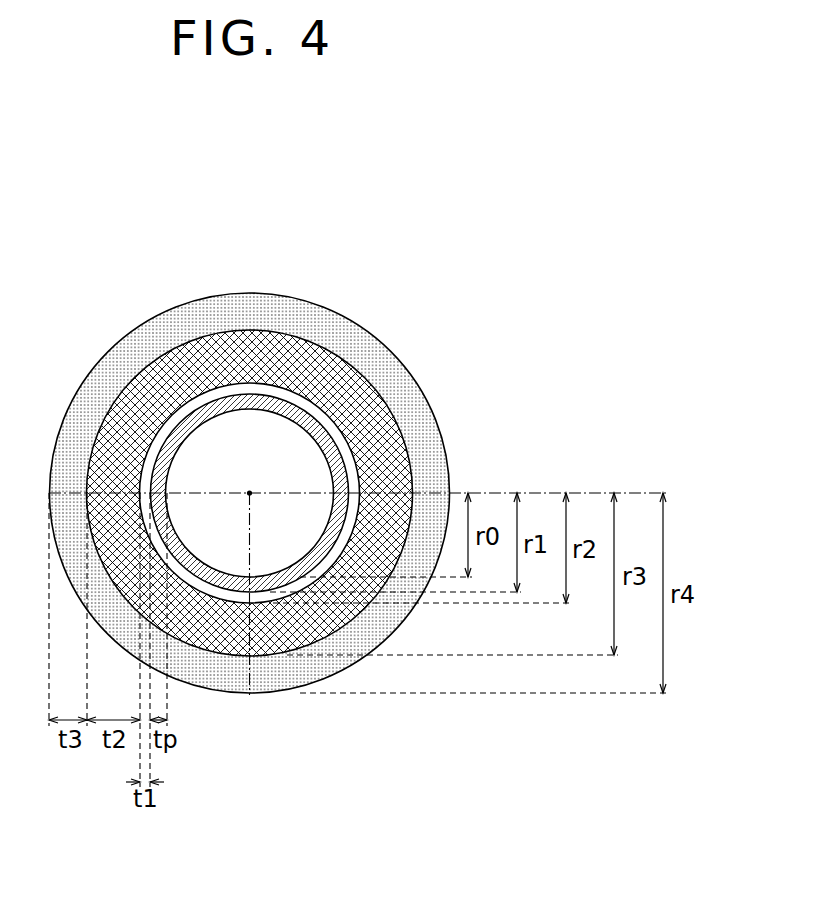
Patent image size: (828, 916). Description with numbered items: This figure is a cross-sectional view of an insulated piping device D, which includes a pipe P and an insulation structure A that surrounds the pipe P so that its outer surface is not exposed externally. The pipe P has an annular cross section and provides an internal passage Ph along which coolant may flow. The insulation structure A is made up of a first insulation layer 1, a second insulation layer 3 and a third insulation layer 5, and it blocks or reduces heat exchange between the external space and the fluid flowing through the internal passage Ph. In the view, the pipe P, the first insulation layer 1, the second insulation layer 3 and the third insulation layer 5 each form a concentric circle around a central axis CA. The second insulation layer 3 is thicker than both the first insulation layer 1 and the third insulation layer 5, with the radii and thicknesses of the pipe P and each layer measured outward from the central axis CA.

The first insulation layer 1 is at (338, 432).
The second insulation layer 3 is at (385, 438).
The third insulation layer 5 is at (442, 458).
The insulation structure A is at (518, 384).
The insulated piping device D is at (439, 194).
The pipe P is at (295, 413).
The internal passage Ph is at (244, 441).
The central axis CA is at (233, 494).